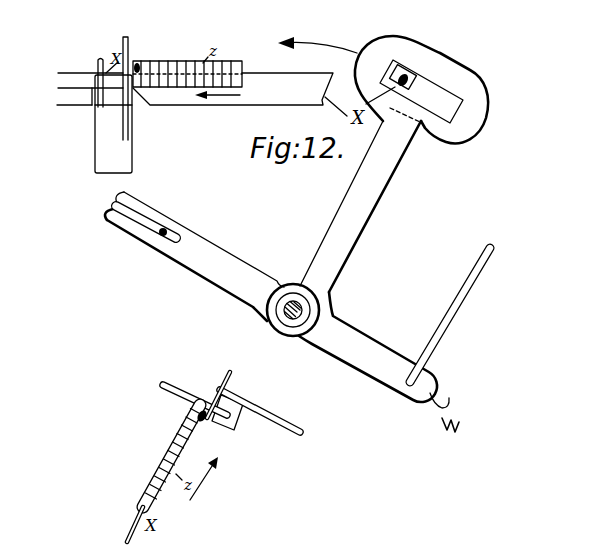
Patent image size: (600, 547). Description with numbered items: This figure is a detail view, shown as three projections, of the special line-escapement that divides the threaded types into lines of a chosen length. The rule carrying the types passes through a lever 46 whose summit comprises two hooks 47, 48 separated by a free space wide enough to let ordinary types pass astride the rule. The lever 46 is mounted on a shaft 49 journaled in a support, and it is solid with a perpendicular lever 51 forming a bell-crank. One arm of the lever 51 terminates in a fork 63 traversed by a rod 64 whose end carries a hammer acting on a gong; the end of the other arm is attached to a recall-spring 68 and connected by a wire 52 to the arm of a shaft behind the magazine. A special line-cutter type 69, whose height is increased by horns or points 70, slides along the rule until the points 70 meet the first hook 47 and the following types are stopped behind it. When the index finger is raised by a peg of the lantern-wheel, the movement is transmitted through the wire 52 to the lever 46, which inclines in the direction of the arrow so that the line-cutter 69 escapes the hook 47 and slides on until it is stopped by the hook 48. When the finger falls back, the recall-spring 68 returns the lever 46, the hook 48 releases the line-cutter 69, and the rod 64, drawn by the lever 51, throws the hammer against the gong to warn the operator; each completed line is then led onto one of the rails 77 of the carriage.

The lever 46 is at (383, 175).
The hook 47 is at (427, 70).
The hook 48 is at (458, 80).
The shaft 49 is at (292, 306).
The perpendicular lever 51 is at (349, 328).
The wire 52 is at (459, 296).
The fork 63 is at (143, 222).
The rod 64 is at (160, 242).
The recall-spring 68 is at (444, 426).
The line-cutter type 69 is at (411, 84).
The horns or points 70 is at (416, 76).
The rails 77 is at (80, 108).